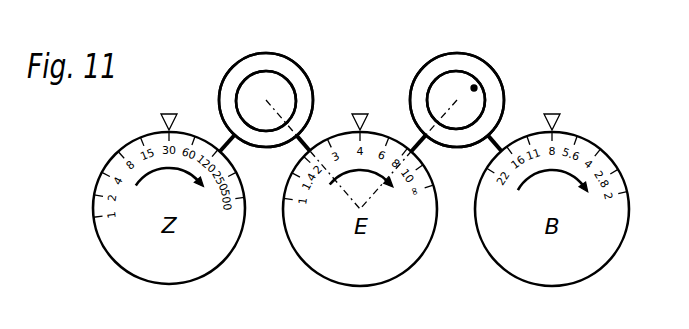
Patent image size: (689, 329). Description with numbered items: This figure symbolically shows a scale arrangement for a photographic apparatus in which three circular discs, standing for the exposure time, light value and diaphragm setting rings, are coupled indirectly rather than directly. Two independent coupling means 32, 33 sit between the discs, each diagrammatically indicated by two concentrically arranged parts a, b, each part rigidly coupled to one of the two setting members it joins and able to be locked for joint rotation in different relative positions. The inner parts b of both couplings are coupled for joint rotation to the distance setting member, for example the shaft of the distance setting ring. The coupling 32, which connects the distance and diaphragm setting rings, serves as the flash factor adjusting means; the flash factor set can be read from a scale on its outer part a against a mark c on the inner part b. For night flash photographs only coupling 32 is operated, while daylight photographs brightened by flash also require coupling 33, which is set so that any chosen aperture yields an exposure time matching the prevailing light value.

The outer part a is at (243, 66).
The inner part b is at (247, 95).
The mark c is at (474, 84).
The coupling 33 is at (269, 140).
The coupling 32 is at (462, 145).